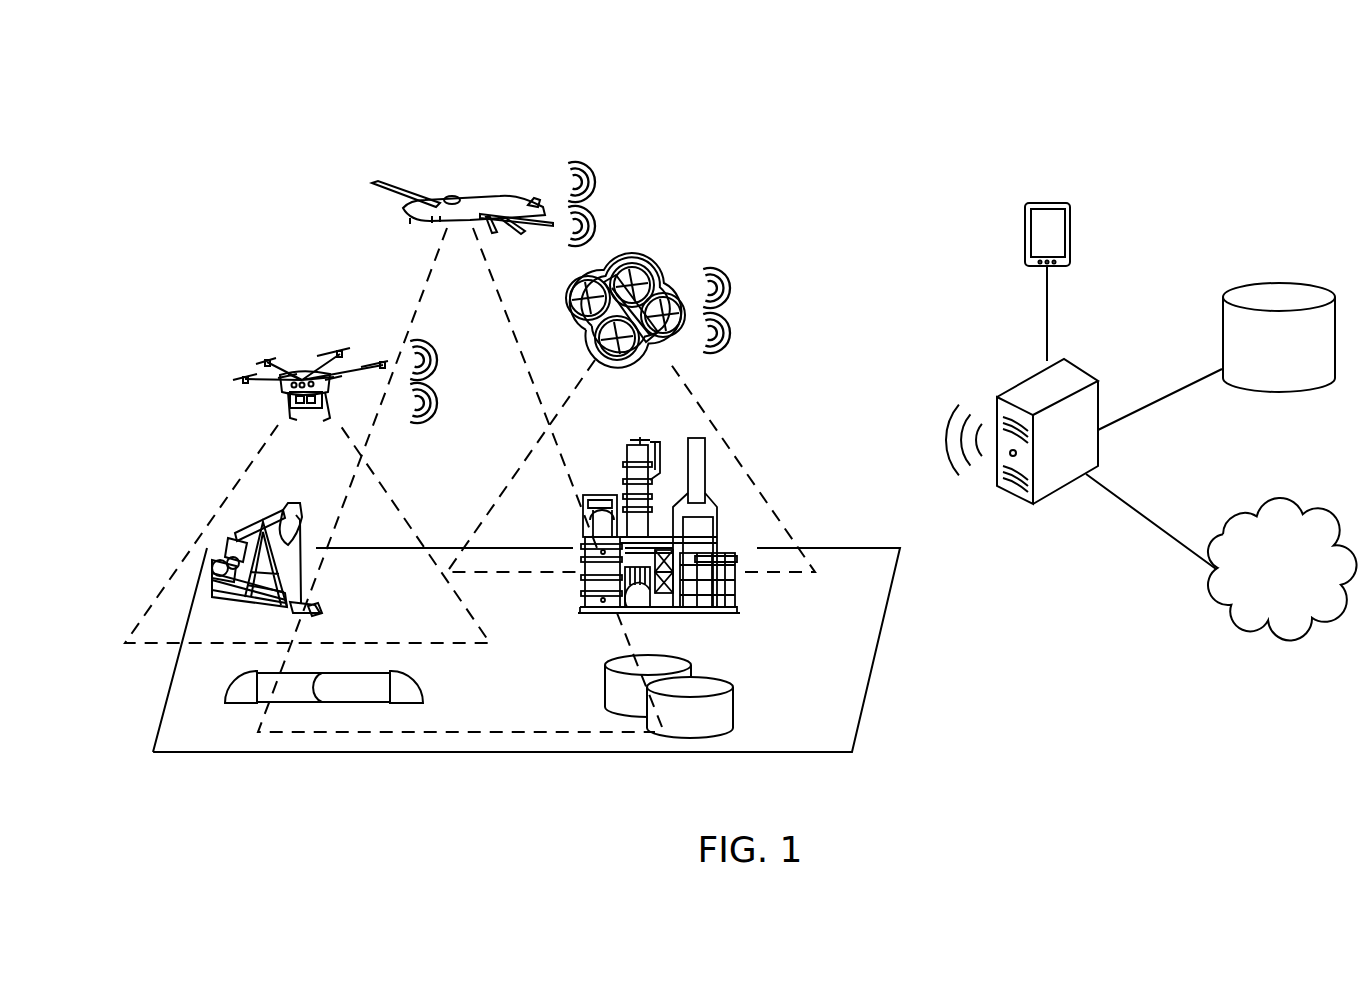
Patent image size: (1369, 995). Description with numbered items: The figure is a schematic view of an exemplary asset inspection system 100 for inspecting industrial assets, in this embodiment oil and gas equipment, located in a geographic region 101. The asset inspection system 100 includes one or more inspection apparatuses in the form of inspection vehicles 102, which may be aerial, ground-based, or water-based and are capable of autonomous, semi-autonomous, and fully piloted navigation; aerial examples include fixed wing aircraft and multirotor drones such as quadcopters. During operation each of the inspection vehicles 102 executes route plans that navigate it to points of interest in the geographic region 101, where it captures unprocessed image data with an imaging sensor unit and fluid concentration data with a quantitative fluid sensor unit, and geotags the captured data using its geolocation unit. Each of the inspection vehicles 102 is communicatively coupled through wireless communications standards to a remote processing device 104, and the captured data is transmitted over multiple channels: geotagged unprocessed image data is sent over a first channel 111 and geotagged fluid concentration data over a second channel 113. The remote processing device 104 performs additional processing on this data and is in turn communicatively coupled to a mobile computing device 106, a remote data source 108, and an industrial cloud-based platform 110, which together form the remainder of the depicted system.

The asset inspection system 100 is at (1125, 92).
The geographic region 101 is at (872, 672).
The inspection vehicle 102 is at (466, 195).
The remote processing device 104 is at (1005, 390).
The mobile computing device 106 is at (1047, 202).
The remote data source 108 is at (1277, 281).
The industrial cloud-based platform 110 is at (1291, 512).
The first channel 111 is at (443, 400).
The second channel 113 is at (443, 360).